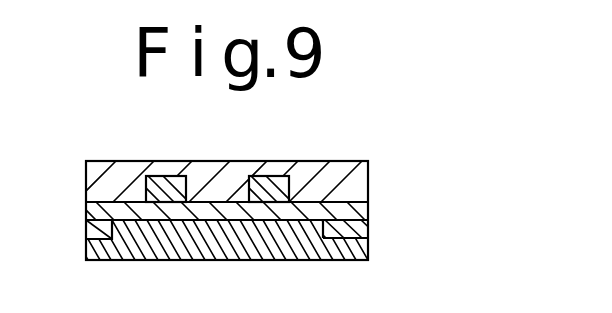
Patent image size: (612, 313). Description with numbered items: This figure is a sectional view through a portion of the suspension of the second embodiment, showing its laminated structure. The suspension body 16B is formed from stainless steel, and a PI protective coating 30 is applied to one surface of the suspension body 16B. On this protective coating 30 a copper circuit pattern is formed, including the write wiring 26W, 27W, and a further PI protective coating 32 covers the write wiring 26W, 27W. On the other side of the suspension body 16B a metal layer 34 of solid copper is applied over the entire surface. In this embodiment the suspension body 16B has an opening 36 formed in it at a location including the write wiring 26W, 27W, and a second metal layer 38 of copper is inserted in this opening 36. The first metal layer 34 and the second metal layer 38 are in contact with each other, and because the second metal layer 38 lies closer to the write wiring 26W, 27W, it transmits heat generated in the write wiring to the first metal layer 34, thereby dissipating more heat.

The PI protective coating 30 is at (97, 203).
The PI protective coating 32 is at (112, 178).
The write wiring 27W is at (166, 176).
The write wiring 26W is at (267, 177).
The second metal layer 38 is at (282, 219).
The suspension body 16B is at (370, 228).
The metal layer 34 is at (350, 245).
The opening 36 is at (96, 245).